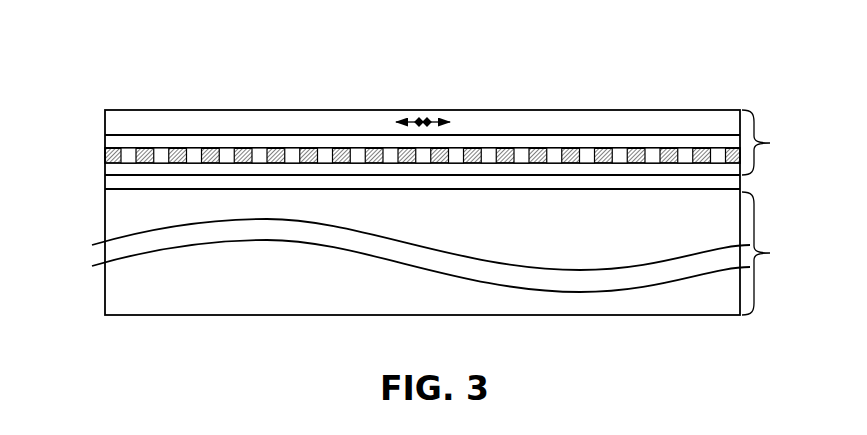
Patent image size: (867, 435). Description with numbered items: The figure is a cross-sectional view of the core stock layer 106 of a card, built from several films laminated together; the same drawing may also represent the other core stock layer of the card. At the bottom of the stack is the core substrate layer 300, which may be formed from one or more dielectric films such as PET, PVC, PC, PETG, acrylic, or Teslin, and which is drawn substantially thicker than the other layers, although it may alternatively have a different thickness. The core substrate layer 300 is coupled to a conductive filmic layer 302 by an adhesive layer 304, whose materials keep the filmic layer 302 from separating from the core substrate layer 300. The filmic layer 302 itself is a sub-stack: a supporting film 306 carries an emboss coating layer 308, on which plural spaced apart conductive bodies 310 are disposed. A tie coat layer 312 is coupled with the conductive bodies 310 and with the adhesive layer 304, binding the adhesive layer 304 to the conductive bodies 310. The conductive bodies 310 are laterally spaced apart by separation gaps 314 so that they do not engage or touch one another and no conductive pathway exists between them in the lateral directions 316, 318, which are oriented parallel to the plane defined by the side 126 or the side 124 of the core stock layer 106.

The core stock layer 106 is at (703, 59).
The side 124 is at (584, 104).
The side 126 is at (323, 318).
The core substrate layer 300 is at (457, 253).
The conductive filmic layer 302 is at (781, 142).
The adhesive layer 304 is at (733, 181).
The supporting film 306 is at (110, 125).
The emboss coating layer 308 is at (110, 142).
The conductive bodies 310 is at (212, 157).
The tie coat layer 312 is at (108, 168).
The separation gaps 314 is at (227, 156).
The lateral direction 316 is at (402, 121).
The lateral direction 318 is at (443, 121).